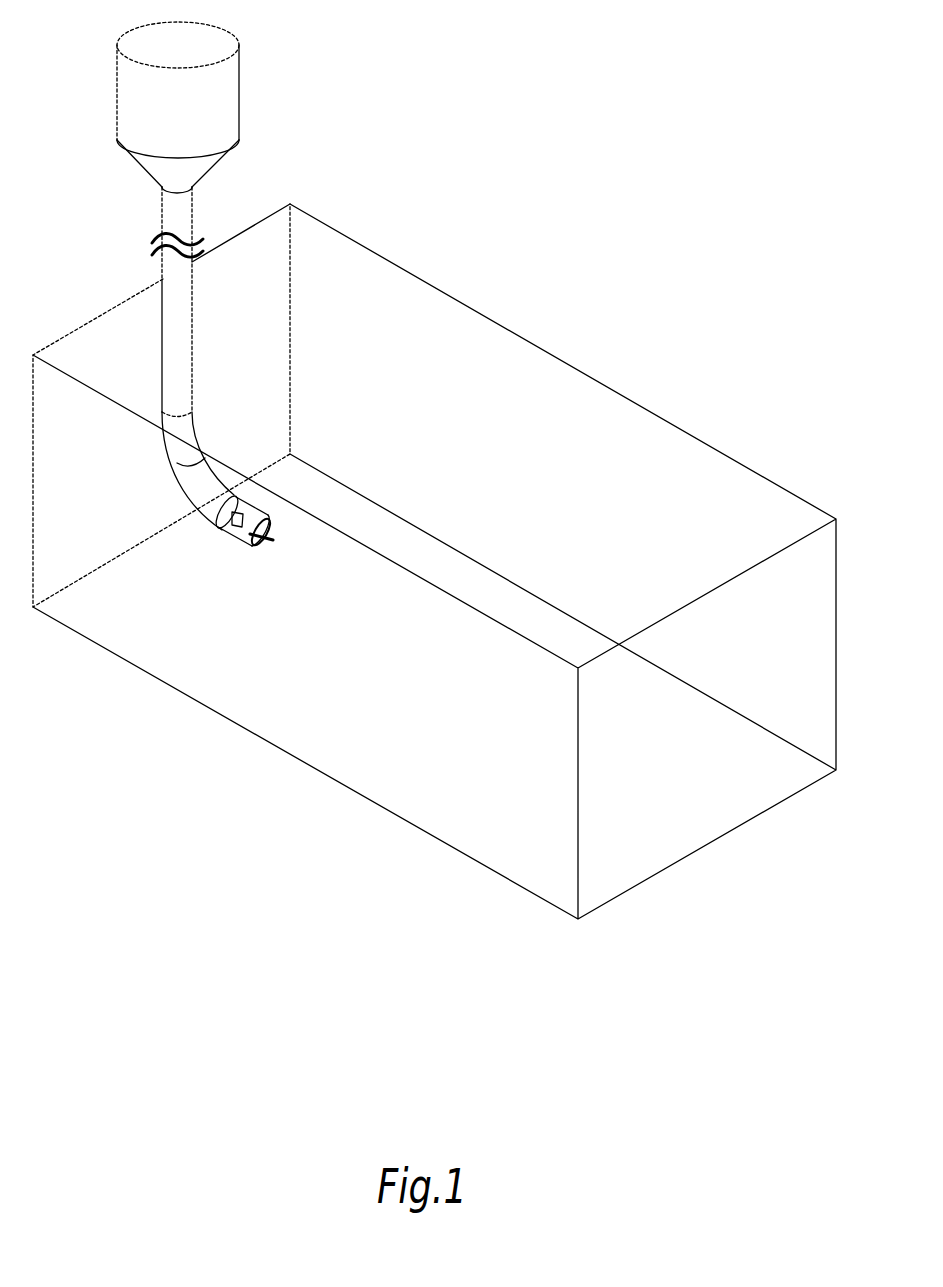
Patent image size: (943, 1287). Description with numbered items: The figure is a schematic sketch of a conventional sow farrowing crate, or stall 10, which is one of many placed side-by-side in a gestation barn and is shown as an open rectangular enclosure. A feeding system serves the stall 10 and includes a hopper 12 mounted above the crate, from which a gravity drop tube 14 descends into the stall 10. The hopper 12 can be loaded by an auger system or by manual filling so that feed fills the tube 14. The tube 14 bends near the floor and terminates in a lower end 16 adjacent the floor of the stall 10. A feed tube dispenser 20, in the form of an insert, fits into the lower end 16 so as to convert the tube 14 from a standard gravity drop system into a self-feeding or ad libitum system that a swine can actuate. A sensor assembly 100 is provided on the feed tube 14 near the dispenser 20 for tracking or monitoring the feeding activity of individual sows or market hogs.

The farrowing crate 10 is at (560, 313).
The hopper 12 is at (231, 96).
The gravity drop tube 14 is at (168, 267).
The lower end 16 is at (193, 486).
The feed tube dispenser 20 is at (268, 533).
The sensor assembly 100 is at (237, 527).